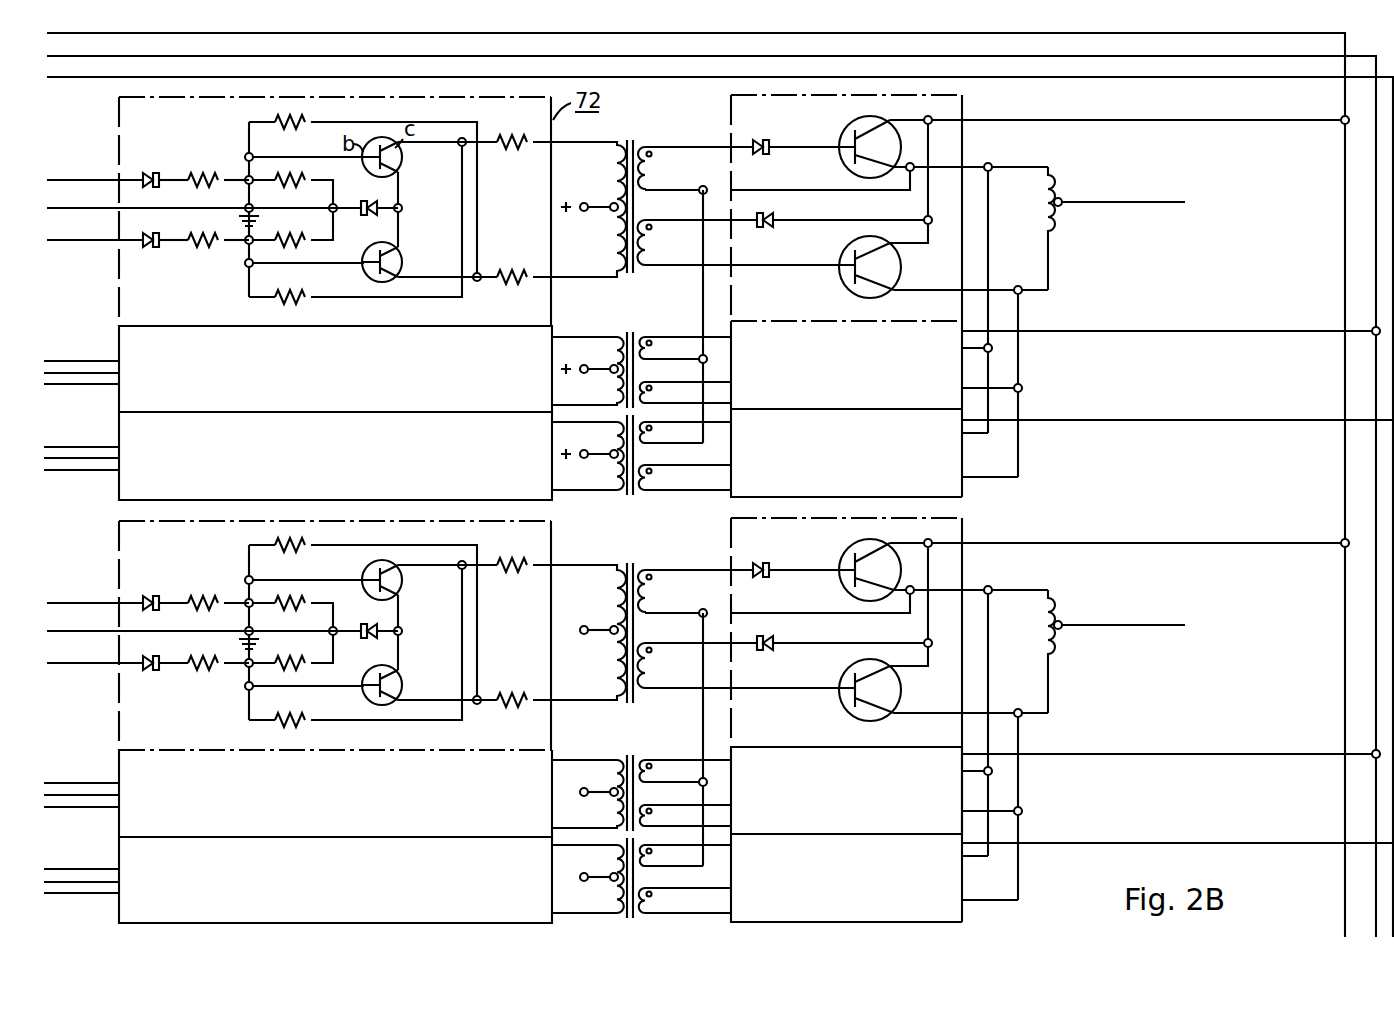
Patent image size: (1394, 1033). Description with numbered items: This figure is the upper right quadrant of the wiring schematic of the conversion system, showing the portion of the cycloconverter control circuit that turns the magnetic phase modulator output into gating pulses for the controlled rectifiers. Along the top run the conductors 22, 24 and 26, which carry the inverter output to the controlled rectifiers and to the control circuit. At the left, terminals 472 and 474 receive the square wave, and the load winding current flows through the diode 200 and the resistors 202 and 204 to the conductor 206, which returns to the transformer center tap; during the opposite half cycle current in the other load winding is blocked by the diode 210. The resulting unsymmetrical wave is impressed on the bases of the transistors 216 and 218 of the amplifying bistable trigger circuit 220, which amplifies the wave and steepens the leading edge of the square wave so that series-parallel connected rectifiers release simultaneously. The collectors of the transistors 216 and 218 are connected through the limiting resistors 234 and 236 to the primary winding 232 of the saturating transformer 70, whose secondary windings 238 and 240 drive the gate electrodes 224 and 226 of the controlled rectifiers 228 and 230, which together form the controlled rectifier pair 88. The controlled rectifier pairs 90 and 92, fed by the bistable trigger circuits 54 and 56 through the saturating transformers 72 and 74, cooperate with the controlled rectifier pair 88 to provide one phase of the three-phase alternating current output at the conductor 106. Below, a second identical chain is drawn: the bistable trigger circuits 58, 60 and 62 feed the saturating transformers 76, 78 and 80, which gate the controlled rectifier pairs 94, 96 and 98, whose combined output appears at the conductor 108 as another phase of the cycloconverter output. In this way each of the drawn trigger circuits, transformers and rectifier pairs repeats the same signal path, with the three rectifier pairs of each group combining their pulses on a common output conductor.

The conductor 22 is at (52, 34).
The conductor 24 is at (52, 57).
The conductor 26 is at (52, 78).
The bistable trigger circuit 54 is at (344, 378).
The bistable trigger circuit 56 is at (344, 466).
The bistable trigger circuit 58 is at (576, 540).
The bistable trigger circuit 60 is at (344, 802).
The bistable trigger circuit 62 is at (344, 889).
The saturating transformer 70 is at (706, 193).
The saturating transformer 72 is at (644, 323).
The saturating transformer 74 is at (644, 519).
The saturating transformer 76 is at (644, 563).
The saturating transformer 78 is at (644, 747).
The saturating transformer 80 is at (644, 942).
The controlled rectifier pair 88 is at (1062, 296).
The controlled rectifier pair 90 is at (866, 376).
The controlled rectifier pair 92 is at (866, 462).
The controlled rectifier pair 94 is at (965, 576).
The controlled rectifier pair 96 is at (866, 798).
The controlled rectifier pair 98 is at (866, 884).
The conductor 106 is at (1132, 201).
The output winding 108 is at (1131, 627).
The diode 200 is at (165, 160).
The resistor 202 is at (201, 173).
The resistor 204 is at (284, 186).
The conductor 206 is at (68, 196).
The diode 210 is at (161, 248).
The transistor 216 is at (403, 156).
The transistor 218 is at (402, 258).
The amplifying bistable trigger circuit 220 is at (453, 216).
The gate electrode 224 is at (844, 157).
The gate electrode 226 is at (844, 271).
The controlled rectifier 228 is at (854, 118).
The controlled rectifier 230 is at (854, 242).
The primary winding 232 is at (612, 191).
The limiting resistor 234 is at (535, 114).
The limiting resistor 236 is at (523, 288).
The secondary winding 238 is at (650, 177).
The secondary winding 240 is at (648, 253).
The terminal 472 is at (68, 168).
The terminal 474 is at (68, 226).